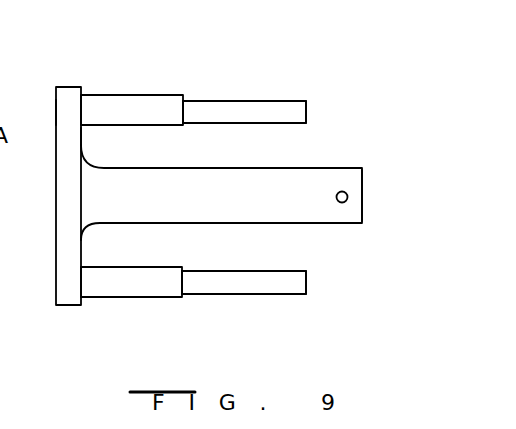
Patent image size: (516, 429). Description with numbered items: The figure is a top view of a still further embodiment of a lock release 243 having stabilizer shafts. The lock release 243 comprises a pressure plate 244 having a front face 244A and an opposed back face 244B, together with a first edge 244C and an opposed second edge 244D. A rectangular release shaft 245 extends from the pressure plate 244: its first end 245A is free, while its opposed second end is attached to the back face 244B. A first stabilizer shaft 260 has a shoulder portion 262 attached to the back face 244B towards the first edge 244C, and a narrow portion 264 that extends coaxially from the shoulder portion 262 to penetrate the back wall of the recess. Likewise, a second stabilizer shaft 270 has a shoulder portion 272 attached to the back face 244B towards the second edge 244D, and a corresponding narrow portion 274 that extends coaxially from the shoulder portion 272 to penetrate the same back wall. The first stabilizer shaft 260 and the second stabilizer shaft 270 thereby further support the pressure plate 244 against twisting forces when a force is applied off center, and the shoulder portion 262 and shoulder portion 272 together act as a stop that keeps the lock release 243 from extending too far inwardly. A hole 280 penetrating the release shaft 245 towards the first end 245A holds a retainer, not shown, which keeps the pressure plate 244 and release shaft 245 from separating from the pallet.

The lock release 243 is at (268, 54).
The pressure plate 244 is at (54, 316).
The front face 244A is at (56, 112).
The back face 244B is at (82, 137).
The first edge 244C is at (68, 87).
The second edge 244D is at (70, 305).
The rectangular release shaft 245 is at (232, 210).
The first end 245A is at (363, 199).
The first stabilizer shaft 260 is at (322, 98).
The shoulder portion 262 is at (125, 89).
The narrow portion 264 is at (272, 100).
The second stabilizer shaft 270 is at (322, 270).
The shoulder portion 272 is at (108, 267).
The second arm rod portion 274 is at (262, 270).
The aperture 280 is at (339, 191).